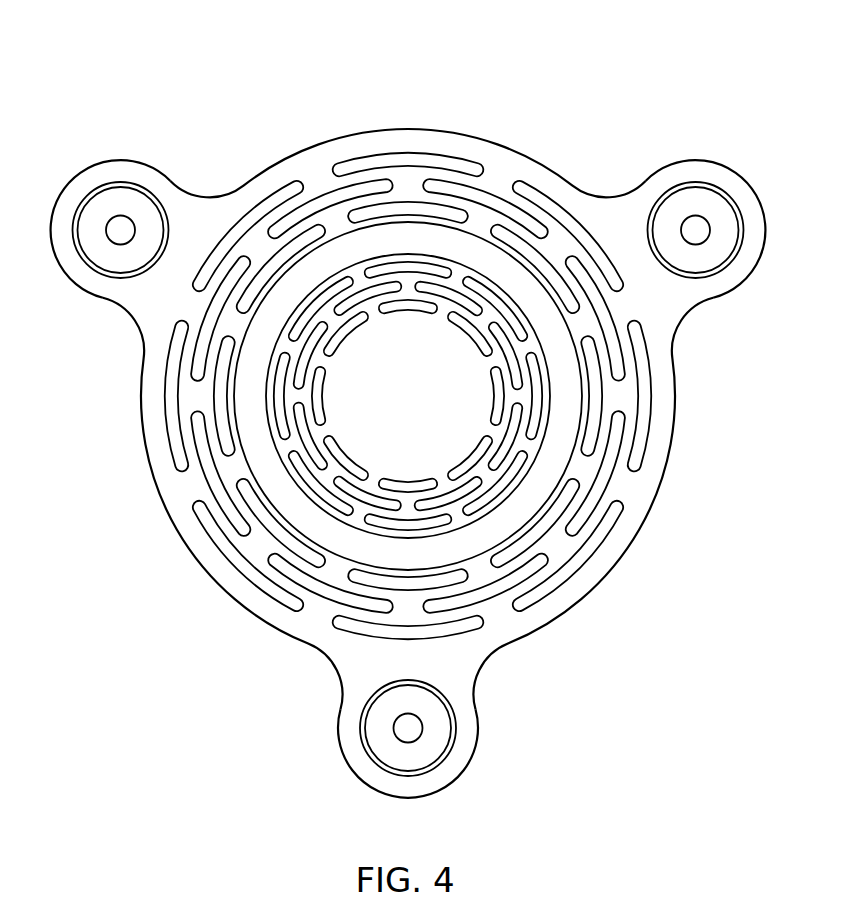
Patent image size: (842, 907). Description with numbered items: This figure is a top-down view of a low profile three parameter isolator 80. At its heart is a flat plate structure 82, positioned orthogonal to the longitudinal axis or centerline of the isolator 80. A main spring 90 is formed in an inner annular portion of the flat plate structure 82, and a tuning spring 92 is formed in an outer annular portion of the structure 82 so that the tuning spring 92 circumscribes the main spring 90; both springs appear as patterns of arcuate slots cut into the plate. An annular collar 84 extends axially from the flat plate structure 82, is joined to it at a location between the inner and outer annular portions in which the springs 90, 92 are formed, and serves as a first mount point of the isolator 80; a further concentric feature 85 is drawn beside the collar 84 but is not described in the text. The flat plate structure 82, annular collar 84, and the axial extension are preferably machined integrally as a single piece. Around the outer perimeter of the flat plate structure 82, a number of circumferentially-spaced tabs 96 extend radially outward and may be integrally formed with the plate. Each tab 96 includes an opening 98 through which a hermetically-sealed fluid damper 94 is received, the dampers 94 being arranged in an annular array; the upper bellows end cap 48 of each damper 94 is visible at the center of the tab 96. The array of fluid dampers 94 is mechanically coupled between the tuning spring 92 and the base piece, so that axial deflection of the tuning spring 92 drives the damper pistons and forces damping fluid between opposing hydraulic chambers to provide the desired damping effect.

The low profile three parameter isolator 80 is at (407, 425).
The flat plate structure 82 is at (645, 490).
The annular collar 84 is at (478, 240).
The inner hub ring 85 is at (407, 254).
The main spring 90 is at (540, 360).
The tuning spring 92 is at (222, 562).
The fluid damper 94 is at (108, 260).
The tab 96 is at (120, 161).
The opening 98 is at (168, 230).
The upper bellows end cap 48 is at (109, 219).